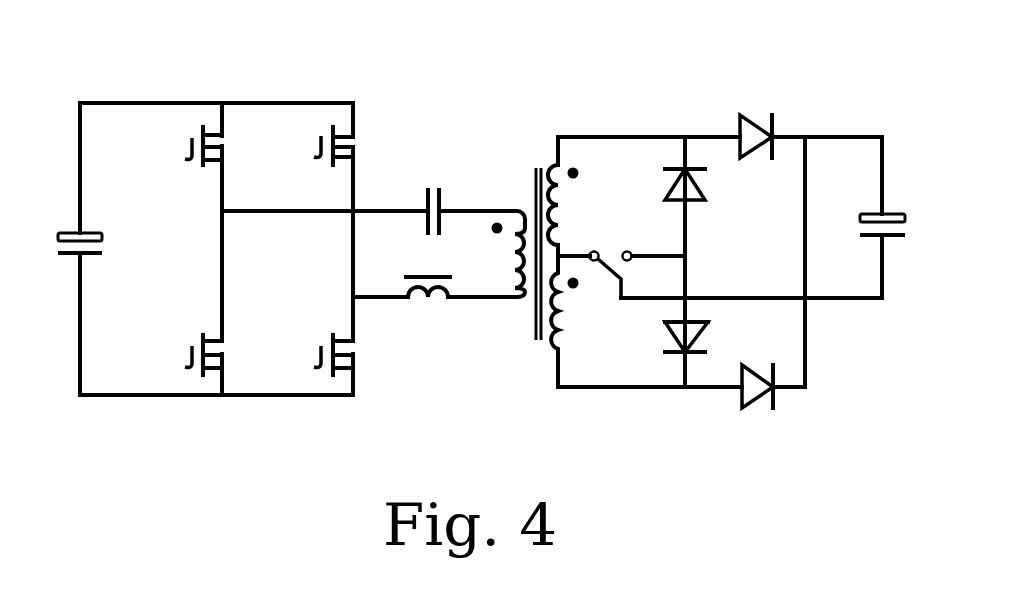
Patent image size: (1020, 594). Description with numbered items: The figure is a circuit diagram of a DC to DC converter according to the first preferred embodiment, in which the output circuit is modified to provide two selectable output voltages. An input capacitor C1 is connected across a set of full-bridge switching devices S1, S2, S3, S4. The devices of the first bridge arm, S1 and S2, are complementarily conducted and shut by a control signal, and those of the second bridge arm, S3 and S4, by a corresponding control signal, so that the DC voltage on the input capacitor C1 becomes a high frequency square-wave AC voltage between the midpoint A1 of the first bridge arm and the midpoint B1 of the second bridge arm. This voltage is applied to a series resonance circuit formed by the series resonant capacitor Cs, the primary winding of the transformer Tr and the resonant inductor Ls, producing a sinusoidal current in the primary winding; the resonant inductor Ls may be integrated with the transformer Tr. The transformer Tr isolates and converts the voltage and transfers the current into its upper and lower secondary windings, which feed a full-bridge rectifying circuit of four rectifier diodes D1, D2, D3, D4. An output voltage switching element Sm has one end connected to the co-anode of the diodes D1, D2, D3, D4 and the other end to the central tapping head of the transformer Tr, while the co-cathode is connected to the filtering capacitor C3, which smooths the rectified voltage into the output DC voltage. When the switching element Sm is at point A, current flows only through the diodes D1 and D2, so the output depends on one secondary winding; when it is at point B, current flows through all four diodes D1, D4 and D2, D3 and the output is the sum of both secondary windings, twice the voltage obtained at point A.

The full-bridge switching device S1 is at (180, 146).
The full-bridge switching device S2 is at (180, 355).
The full-bridge switching device S3 is at (311, 146).
The full-bridge switching device S4 is at (311, 355).
The input capacitor C1 is at (102, 248).
The midpoint of the first bridge arm A1 is at (302, 211).
The midpoint of the second bridge arm B1 is at (359, 299).
The series resonant capacitor Cs is at (440, 192).
The resonant inductor Ls is at (461, 308).
The transformer Tr is at (509, 262).
The output voltage switching element Sm is at (720, 283).
The point A is at (588, 244).
The point B is at (633, 244).
The rectifier diode D1 is at (756, 152).
The rectifier diode D2 is at (758, 370).
The rectifier diode D3 is at (665, 179).
The rectifier diode D4 is at (666, 348).
The filtering capacitor C3 is at (868, 203).